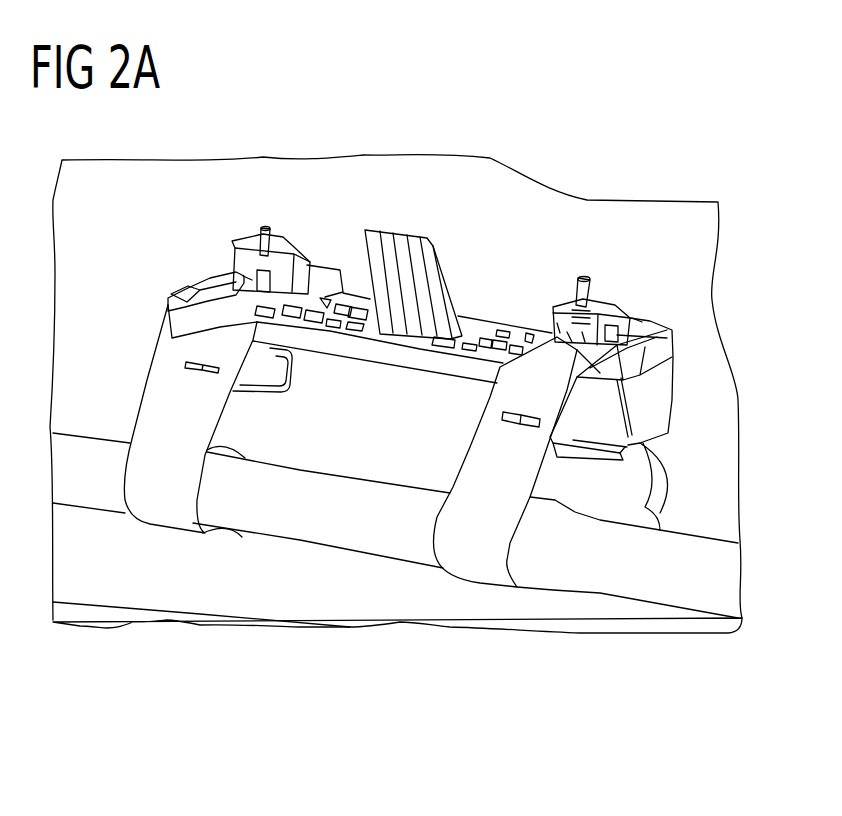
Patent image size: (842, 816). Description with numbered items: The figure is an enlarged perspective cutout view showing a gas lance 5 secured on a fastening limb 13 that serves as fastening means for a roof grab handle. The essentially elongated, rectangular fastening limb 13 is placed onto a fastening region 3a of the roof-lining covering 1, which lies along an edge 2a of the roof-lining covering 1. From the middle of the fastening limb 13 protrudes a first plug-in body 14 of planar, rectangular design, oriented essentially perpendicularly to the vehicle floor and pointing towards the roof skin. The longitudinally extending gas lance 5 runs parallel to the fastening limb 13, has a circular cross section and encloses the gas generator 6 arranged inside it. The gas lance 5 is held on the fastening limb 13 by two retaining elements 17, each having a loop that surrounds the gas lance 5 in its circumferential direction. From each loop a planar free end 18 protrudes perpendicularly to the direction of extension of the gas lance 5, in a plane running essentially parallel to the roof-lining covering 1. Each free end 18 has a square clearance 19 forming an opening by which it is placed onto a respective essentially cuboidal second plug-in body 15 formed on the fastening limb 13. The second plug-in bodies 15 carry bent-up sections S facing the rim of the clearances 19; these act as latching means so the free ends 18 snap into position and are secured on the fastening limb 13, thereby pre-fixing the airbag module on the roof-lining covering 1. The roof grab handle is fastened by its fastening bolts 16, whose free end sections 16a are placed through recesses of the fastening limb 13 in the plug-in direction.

The roof-lining covering 1 is at (558, 235).
The edge 2a is at (115, 613).
The fastening region 3a is at (368, 405).
The gas lance 5 is at (597, 580).
The gas generator 6 is at (650, 560).
The fastening limb 13 is at (603, 415).
The first plug-in body 14 is at (402, 283).
The second plug-in body 15 is at (282, 252).
The fastening bolt 16 is at (270, 240).
The free end section 16a is at (265, 222).
The retaining element 17 is at (173, 400).
The free end 18 is at (238, 313).
The clearance 19 is at (312, 262).
The bent-up section S is at (240, 272).